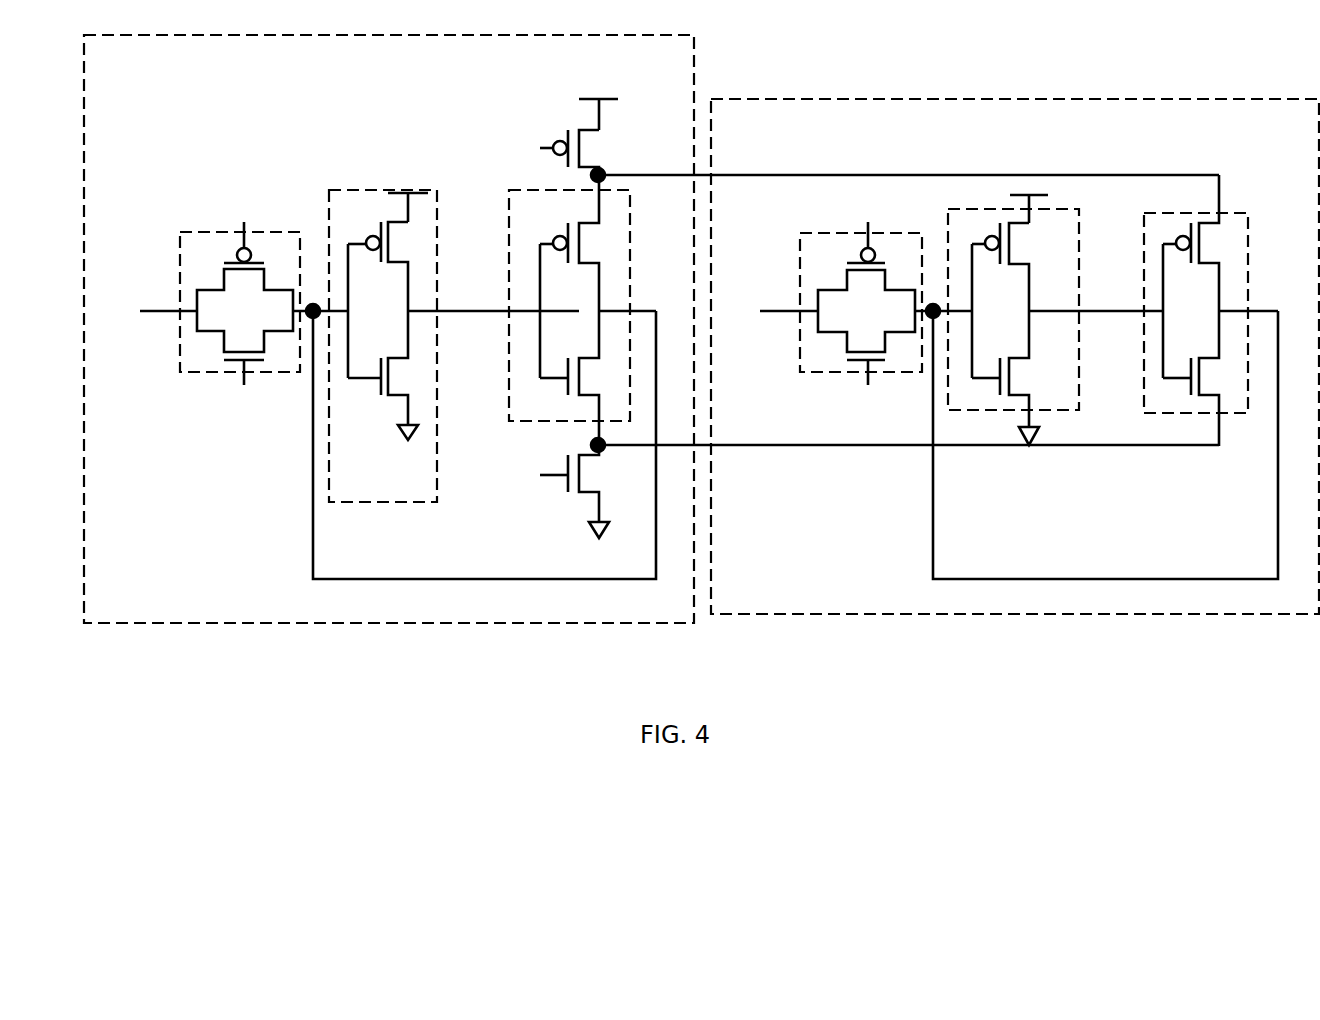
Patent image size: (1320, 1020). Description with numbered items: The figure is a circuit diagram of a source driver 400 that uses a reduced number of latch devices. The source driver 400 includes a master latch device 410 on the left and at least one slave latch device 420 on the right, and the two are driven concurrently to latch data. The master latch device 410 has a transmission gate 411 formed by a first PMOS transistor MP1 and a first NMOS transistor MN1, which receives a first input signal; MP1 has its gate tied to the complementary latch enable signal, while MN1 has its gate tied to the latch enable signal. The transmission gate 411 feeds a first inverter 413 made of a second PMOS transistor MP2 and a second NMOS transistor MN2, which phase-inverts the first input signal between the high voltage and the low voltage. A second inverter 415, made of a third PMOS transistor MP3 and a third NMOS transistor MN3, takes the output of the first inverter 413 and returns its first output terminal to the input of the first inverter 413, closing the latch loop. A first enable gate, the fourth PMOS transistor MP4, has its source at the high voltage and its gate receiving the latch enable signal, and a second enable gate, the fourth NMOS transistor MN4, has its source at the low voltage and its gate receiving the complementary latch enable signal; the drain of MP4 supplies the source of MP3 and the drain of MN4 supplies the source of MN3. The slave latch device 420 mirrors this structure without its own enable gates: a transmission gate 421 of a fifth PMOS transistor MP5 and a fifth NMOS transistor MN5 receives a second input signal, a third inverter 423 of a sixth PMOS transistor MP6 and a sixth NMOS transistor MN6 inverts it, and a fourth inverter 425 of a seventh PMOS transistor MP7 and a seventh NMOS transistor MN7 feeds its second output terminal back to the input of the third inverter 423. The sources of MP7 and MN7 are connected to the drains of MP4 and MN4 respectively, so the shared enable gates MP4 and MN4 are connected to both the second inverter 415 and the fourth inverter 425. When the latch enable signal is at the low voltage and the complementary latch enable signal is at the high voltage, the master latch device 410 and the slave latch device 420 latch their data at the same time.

The source driver 400 is at (930, 60).
The master latch device 410 is at (390, 623).
The transmission gate 411 is at (205, 373).
The first inverter 413 is at (385, 503).
The second inverter 415 is at (509, 400).
The slave latch device 420 is at (1125, 614).
The transmission gate 421 is at (840, 373).
The third inverter 423 is at (985, 410).
The fourth inverter 425 is at (1200, 415).
The first PMOS transistor MP1 is at (215, 277).
The first NMOS transistor MN1 is at (223, 350).
The second PMOS transistor MP2 is at (380, 223).
The second NMOS transistor MN2 is at (380, 405).
The third PMOS transistor MP3 is at (562, 225).
The third NMOS transistor MN3 is at (388, 328).
The fourth PMOS transistor MP4 is at (565, 132).
The fourth NMOS transistor MN4 is at (568, 500).
The fifth PMOS transistor MP5 is at (840, 277).
The fifth NMOS transistor MN5 is at (845, 352).
The sixth PMOS transistor MP6 is at (1000, 225).
The sixth NMOS transistor MN6 is at (992, 388).
The seventh PMOS transistor MP7 is at (1191, 225).
The seventh NMOS transistor MN7 is at (1183, 397).